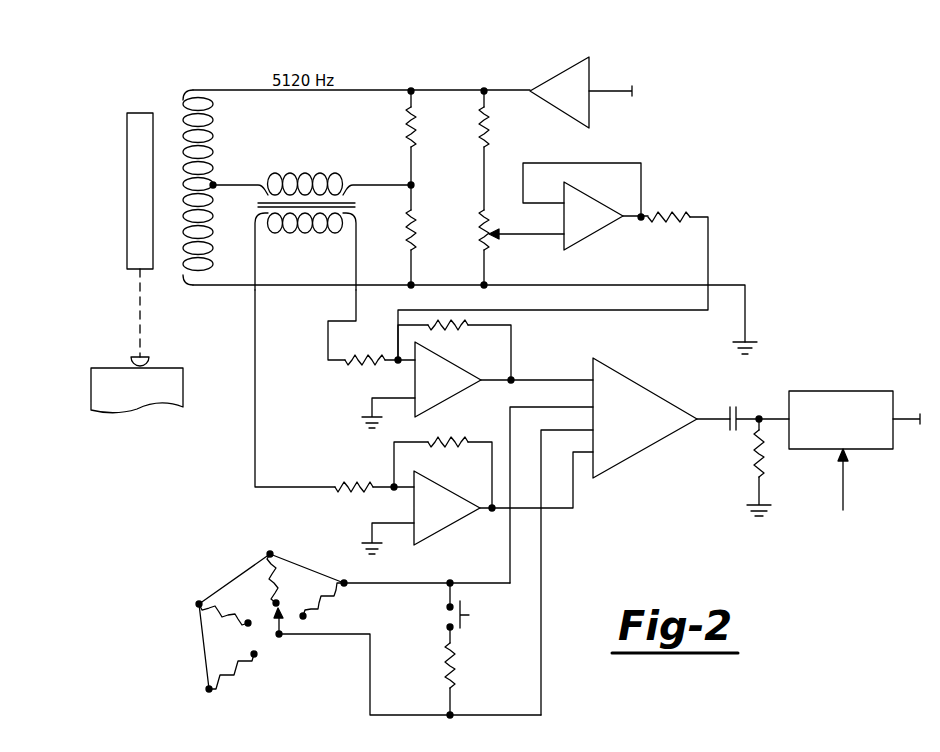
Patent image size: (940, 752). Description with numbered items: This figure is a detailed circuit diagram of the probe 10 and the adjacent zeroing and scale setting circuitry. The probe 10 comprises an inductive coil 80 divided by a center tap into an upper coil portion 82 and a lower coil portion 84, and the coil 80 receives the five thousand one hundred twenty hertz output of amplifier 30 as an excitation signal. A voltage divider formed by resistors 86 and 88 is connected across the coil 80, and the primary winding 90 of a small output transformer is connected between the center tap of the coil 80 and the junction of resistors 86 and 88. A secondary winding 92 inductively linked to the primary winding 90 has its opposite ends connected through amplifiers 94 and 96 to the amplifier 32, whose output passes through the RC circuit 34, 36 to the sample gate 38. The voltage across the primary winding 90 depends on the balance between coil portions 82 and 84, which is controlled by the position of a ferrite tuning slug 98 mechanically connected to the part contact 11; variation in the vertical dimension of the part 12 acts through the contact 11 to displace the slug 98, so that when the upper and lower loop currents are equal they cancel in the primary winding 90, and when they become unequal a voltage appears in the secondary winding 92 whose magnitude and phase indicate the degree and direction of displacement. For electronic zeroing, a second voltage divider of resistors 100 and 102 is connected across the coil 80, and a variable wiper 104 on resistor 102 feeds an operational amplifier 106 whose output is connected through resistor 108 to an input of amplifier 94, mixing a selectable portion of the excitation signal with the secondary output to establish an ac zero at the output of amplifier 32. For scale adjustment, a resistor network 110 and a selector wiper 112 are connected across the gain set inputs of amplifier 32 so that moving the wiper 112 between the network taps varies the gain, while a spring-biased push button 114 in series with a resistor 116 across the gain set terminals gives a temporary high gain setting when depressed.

The probe 10 is at (167, 88).
The part contact 11 is at (135, 356).
The part 12 is at (91, 395).
The amplifier 30 is at (556, 76).
The amplifier 32 is at (640, 381).
The RC circuit capacitor 34 is at (735, 409).
The RC circuit resistor 36 is at (755, 455).
The sample gate 38 is at (840, 391).
The inductive coil 80 is at (222, 90).
The upper coil portion 82 is at (213, 152).
The lower coil portion 84 is at (213, 212).
The voltage divider resistor 86 is at (406, 118).
The voltage divider resistor 88 is at (416, 226).
The primary winding 90 is at (326, 175).
The secondary winding 92 is at (308, 232).
The amplifier 94 is at (450, 356).
The amplifier 96 is at (449, 497).
The ferrite tuning slug 98 is at (127, 193).
The resistor 100 is at (479, 119).
The resistor 102 is at (479, 229).
The variable wiper 104 is at (519, 238).
The operational amplifier 106 is at (600, 239).
The resistor 108 is at (668, 212).
The resistor network 110 is at (243, 575).
The variable position selector wiper 112 is at (279, 637).
The spring-biased push button 114 is at (462, 613).
The resistor 116 is at (458, 677).